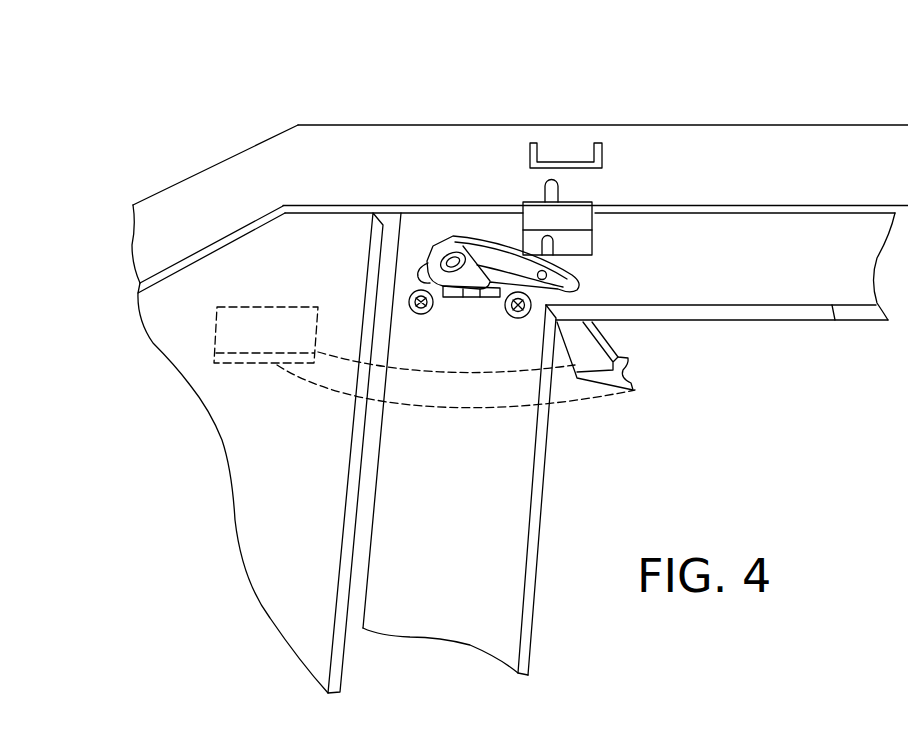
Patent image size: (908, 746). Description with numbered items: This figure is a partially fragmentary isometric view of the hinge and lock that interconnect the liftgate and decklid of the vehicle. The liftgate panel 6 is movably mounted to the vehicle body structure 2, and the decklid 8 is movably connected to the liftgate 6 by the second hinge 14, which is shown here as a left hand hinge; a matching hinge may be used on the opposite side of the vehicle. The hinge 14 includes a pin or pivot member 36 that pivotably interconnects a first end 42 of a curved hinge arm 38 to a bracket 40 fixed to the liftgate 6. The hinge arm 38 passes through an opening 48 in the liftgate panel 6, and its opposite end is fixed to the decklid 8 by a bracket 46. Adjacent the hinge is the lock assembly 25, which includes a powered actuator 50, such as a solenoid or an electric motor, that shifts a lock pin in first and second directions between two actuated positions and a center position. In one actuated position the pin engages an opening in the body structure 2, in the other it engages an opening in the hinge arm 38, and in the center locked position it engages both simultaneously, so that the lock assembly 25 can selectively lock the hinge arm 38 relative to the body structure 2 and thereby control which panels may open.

The body structure 2 is at (758, 142).
The liftgate panel 6 is at (835, 320).
The decklid 8 is at (257, 467).
The second hinge 14 is at (467, 291).
The lock assembly 25 is at (604, 236).
The pivot member 36 is at (435, 242).
The curved hinge arm 38 is at (588, 388).
The bracket 40 is at (482, 295).
The first end 42 is at (453, 237).
The bracket 46 is at (213, 342).
The opening 48 is at (302, 382).
The powered actuator 50 is at (593, 268).